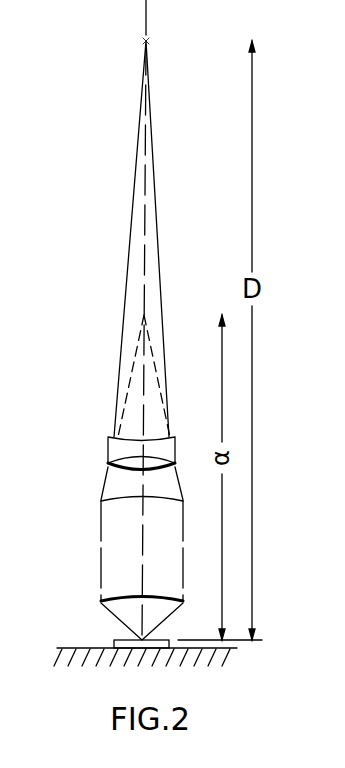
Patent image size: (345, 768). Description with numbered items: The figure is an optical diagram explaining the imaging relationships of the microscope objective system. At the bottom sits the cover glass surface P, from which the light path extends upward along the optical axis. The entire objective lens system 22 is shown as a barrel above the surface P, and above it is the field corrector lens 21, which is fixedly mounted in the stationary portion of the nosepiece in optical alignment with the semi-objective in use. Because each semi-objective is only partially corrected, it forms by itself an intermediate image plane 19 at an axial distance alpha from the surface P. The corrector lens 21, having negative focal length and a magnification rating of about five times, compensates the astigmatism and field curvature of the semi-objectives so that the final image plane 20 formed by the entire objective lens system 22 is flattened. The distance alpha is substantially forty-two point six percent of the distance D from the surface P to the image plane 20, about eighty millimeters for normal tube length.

The image plane 20 is at (267, 41).
The intermediate image plane 19 is at (215, 315).
The field corrector lens 21 is at (100, 443).
The objective lens system 22 is at (97, 617).
The cover glass surface P is at (115, 641).